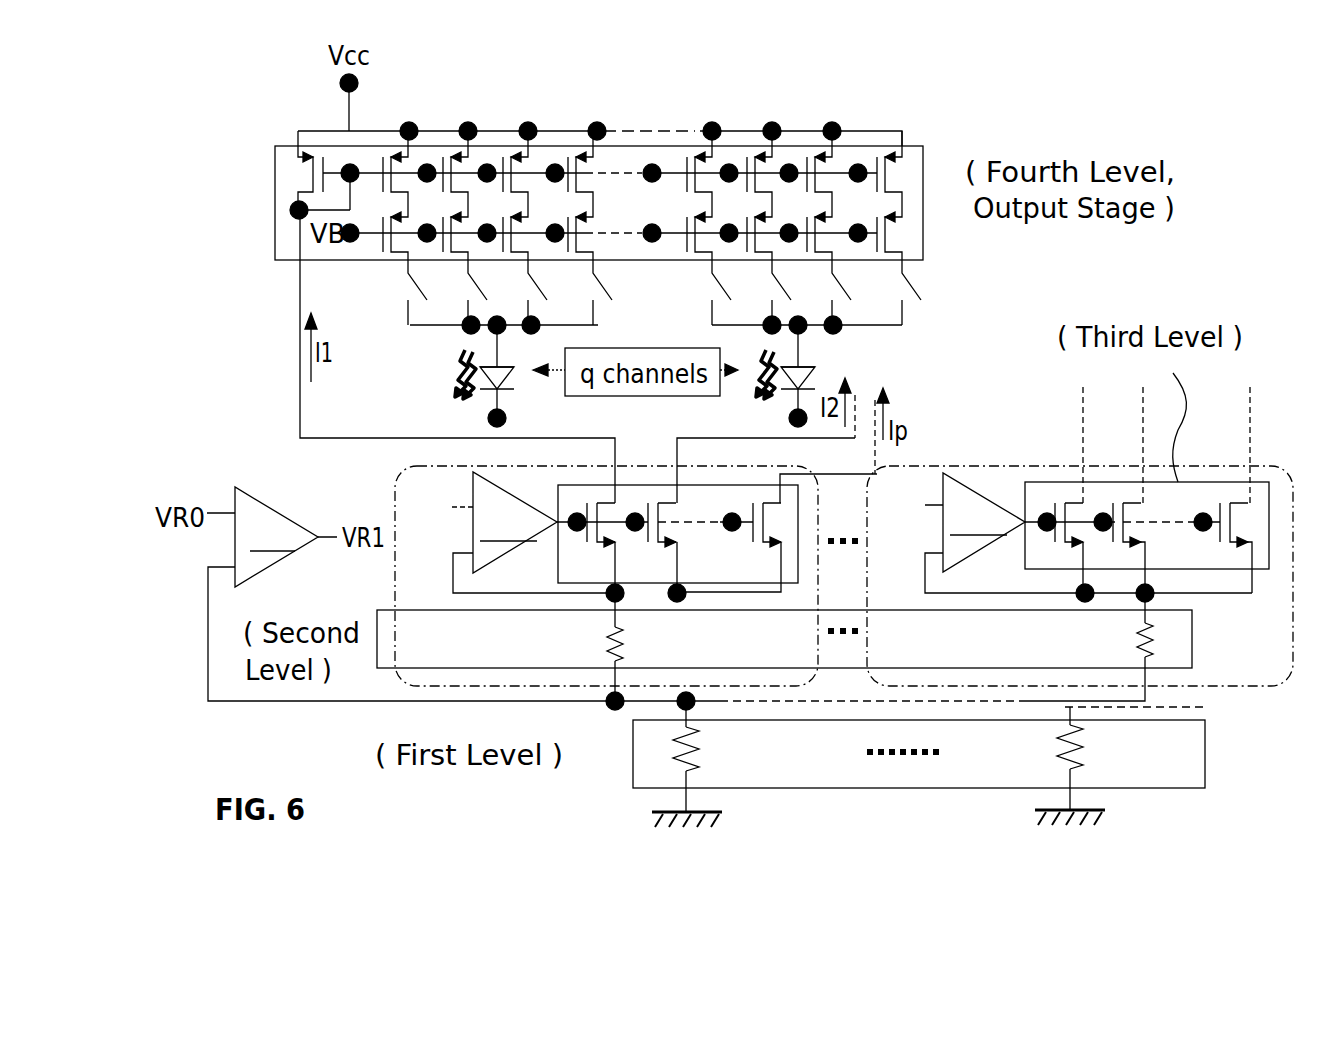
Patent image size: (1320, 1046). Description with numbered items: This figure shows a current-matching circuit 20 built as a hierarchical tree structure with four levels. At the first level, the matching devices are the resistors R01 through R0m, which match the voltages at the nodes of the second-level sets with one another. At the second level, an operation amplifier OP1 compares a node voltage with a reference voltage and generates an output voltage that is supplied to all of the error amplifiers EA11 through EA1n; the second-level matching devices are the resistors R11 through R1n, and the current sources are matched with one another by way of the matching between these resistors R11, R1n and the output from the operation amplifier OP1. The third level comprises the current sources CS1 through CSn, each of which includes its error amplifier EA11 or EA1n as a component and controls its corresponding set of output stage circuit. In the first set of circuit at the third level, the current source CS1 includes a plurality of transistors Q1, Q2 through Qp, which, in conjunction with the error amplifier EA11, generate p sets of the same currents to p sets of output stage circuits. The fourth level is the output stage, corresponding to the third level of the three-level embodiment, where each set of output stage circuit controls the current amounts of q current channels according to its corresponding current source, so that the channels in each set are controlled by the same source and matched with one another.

The constant current source stage (third level) 20 is at (1080, 286).
The operation amplifier OP1 is at (276, 537).
The current source CS1 is at (407, 468).
The current source CSn is at (997, 466).
The error amplifier EA11 is at (515, 522).
The error amplifier EA1n is at (984, 522).
The transistor Q1 is at (591, 548).
The transistor Q2 is at (651, 548).
The transistor Qp is at (729, 547).
The resistor R11 is at (584, 647).
The resistor R1n is at (1086, 647).
The resistor R01 is at (712, 764).
The resistor R0m is at (1121, 766).